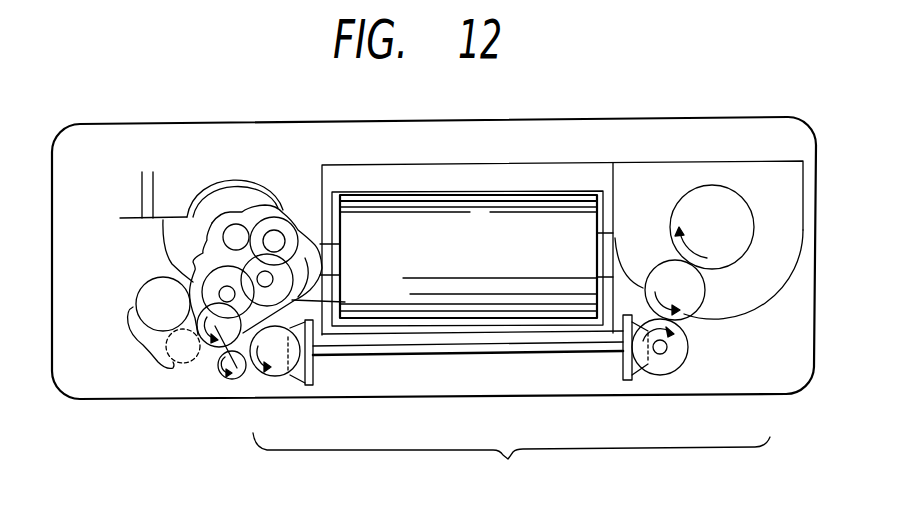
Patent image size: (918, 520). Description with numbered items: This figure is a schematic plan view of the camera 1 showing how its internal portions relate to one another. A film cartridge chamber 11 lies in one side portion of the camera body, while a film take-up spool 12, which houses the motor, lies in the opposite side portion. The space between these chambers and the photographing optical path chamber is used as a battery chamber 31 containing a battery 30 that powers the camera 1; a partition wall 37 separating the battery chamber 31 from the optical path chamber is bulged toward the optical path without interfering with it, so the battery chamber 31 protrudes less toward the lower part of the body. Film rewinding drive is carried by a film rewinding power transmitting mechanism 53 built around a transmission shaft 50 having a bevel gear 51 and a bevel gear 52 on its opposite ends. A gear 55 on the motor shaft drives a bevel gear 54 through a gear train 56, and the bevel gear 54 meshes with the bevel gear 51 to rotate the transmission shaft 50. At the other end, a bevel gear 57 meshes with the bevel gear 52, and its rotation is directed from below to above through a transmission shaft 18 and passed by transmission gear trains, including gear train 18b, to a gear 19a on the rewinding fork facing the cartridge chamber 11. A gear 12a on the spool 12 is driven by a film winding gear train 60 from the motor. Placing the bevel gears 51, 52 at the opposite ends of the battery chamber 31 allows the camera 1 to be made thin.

The camera 1 is at (709, 117).
The film cartridge chamber 11 is at (760, 290).
The film take-up spool 12 is at (213, 182).
The gear 12a is at (177, 244).
The transmission shaft 18 is at (667, 348).
The transmission gear train 18b is at (700, 291).
The gear 19a is at (692, 205).
The battery 30 is at (482, 262).
The battery chamber 31 is at (571, 196).
The partition wall 37 is at (385, 334).
The transmission shaft 50 is at (463, 353).
The bevel gear 51 is at (313, 372).
The bevel gear 52 is at (623, 368).
The film rewinding power transmitting mechanism 53 is at (511, 461).
The bevel gear 54 is at (273, 377).
The gear 55 is at (237, 236).
The gear train 56 is at (345, 302).
The bevel gear 57 is at (672, 369).
The film winding gear train 60 is at (146, 352).